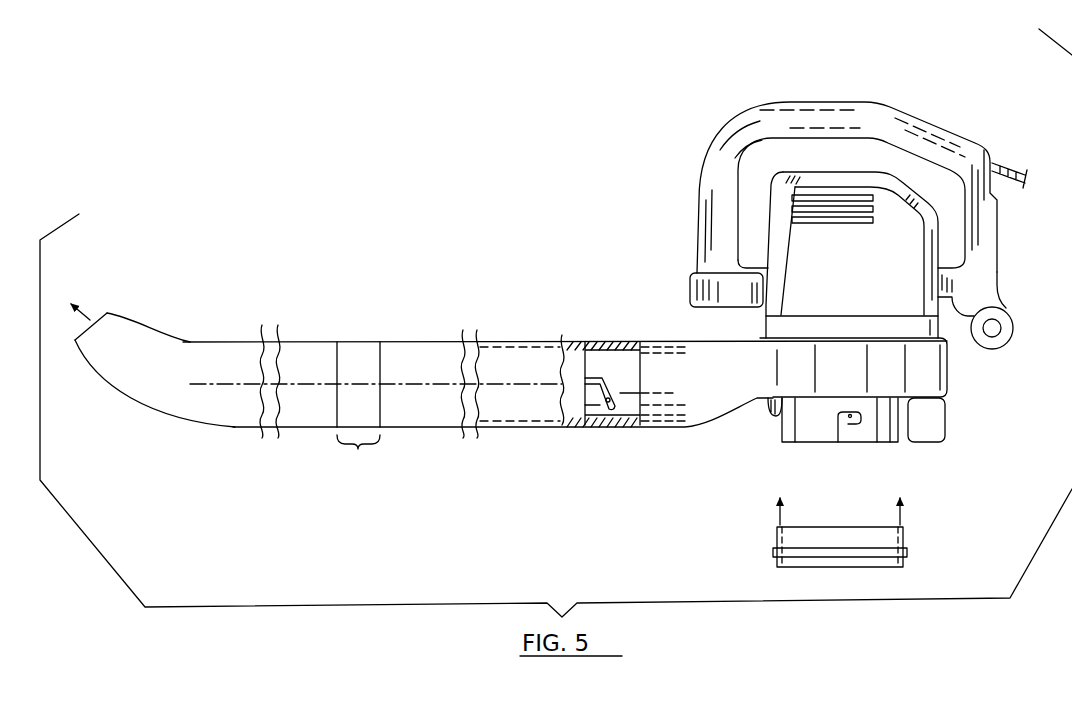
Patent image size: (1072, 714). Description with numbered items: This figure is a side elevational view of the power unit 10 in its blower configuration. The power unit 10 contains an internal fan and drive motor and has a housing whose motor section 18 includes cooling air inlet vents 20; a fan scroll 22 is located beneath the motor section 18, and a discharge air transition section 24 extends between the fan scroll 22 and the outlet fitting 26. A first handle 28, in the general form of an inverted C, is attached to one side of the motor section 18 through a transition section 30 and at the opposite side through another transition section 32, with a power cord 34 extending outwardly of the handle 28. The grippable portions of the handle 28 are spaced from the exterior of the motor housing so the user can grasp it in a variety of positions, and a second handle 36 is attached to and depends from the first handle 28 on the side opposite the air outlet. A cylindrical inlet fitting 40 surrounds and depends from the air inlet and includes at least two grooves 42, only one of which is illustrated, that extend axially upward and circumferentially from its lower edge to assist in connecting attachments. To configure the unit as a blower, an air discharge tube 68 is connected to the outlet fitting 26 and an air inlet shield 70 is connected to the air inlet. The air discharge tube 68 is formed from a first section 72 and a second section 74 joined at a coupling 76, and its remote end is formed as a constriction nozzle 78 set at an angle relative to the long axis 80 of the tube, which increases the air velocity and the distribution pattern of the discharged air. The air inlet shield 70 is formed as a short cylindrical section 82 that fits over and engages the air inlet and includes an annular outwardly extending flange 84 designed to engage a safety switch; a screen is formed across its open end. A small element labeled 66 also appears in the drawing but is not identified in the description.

The power unit 10 is at (827, 265).
The motor section 18 is at (825, 168).
The cooling air inlet vents 20 is at (832, 222).
The fan scroll 22 is at (795, 382).
The discharge air transition section 24 is at (710, 368).
The outlet fitting 26 is at (612, 365).
The first handle 28 is at (862, 112).
The transition section 30 is at (741, 287).
The transition section 32 is at (970, 285).
The power cord 34 is at (1008, 165).
The second handle 36 is at (984, 348).
The inlet fitting 40 is at (888, 428).
The grooves 42 is at (840, 440).
The locking tab 66 is at (618, 379).
The air discharge tube 68 is at (487, 330).
The air inlet shield 70 is at (843, 526).
The first section 72 is at (433, 428).
The second section 74 is at (228, 408).
The coupling 76 is at (358, 408).
The constriction nozzle 78 is at (129, 316).
The long axis 80 is at (230, 383).
The cylindrical section 82 is at (825, 537).
The flange 84 is at (773, 551).